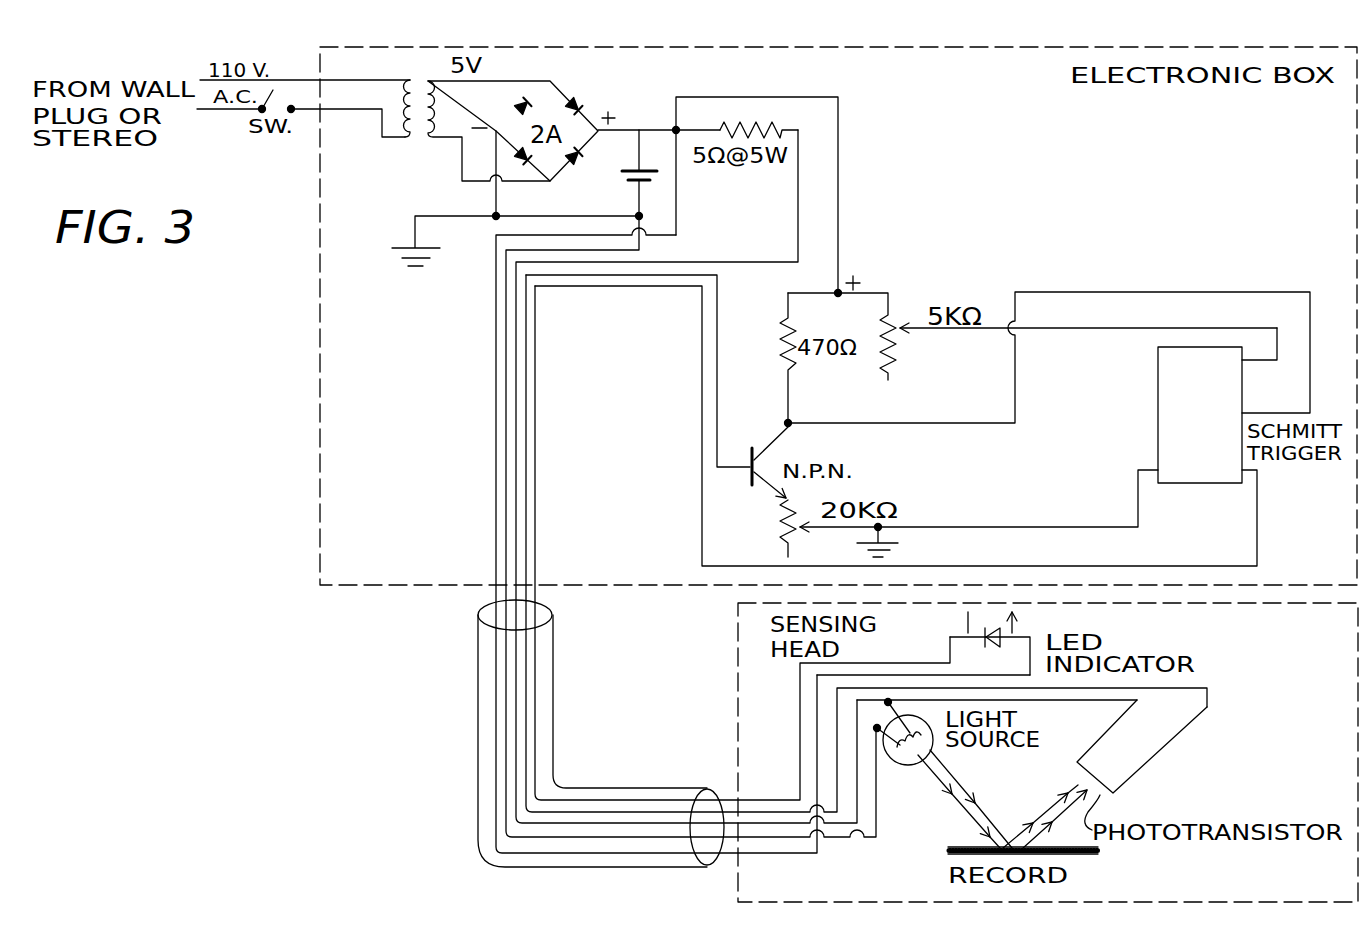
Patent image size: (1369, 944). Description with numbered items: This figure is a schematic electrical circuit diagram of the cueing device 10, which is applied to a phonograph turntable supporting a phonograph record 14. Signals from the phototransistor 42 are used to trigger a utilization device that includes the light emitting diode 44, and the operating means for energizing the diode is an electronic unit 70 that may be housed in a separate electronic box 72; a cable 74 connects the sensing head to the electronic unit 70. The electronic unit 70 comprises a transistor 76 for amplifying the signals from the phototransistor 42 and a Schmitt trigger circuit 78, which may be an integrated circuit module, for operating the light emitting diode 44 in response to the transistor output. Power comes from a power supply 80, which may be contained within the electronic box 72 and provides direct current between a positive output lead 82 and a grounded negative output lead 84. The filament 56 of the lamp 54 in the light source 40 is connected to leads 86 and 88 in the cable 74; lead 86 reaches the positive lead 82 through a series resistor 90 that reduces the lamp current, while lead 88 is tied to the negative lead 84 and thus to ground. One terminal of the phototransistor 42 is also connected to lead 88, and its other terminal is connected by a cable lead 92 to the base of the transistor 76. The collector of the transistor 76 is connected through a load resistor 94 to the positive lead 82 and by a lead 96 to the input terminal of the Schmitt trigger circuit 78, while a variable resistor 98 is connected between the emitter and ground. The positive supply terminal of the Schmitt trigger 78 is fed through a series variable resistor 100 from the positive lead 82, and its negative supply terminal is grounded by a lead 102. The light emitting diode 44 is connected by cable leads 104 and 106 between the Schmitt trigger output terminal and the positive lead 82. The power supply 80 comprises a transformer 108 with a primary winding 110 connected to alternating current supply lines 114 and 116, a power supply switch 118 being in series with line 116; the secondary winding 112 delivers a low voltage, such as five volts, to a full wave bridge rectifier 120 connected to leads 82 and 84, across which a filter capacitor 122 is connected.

The cueing device 10 is at (382, 670).
The phonograph record 14 is at (1029, 867).
The light source 40 is at (950, 758).
The photoelectric device (phototransistor) 42 is at (1103, 772).
The light emitting diode 44 is at (1094, 644).
The lamp 54 is at (888, 770).
The filament 56 is at (920, 765).
The electronic unit 70 is at (298, 362).
The electronic box 72 is at (320, 392).
The cable 74 is at (601, 733).
The transistor 76 is at (775, 455).
The Schmitt trigger circuit 78 is at (1185, 483).
The power supply 80 is at (550, 117).
The positive power supply output lead 82 is at (663, 114).
The negative power supply output lead 84 is at (540, 215).
The lead 86 is at (798, 192).
The lead 88 is at (497, 292).
The series resistor 90 is at (743, 126).
The cable lead 92 is at (722, 318).
The load resistor 94 is at (790, 372).
The lead 96 is at (1015, 392).
The variable resistor 98 is at (785, 528).
The series variable resistor 100 is at (885, 323).
The lead 102 is at (1068, 503).
The cable lead 104 is at (1033, 565).
The cable lead 106 is at (678, 218).
The transformer 108 is at (451, 117).
The primary winding 110 is at (405, 140).
The secondary winding 112 is at (420, 145).
The alternating current supply line 114 is at (200, 80).
The alternating current supply line 116 is at (220, 112).
The power supply switch 118 is at (284, 135).
The full wave bridge rectifier 120 is at (568, 95).
The filter capacitor 122 is at (656, 174).